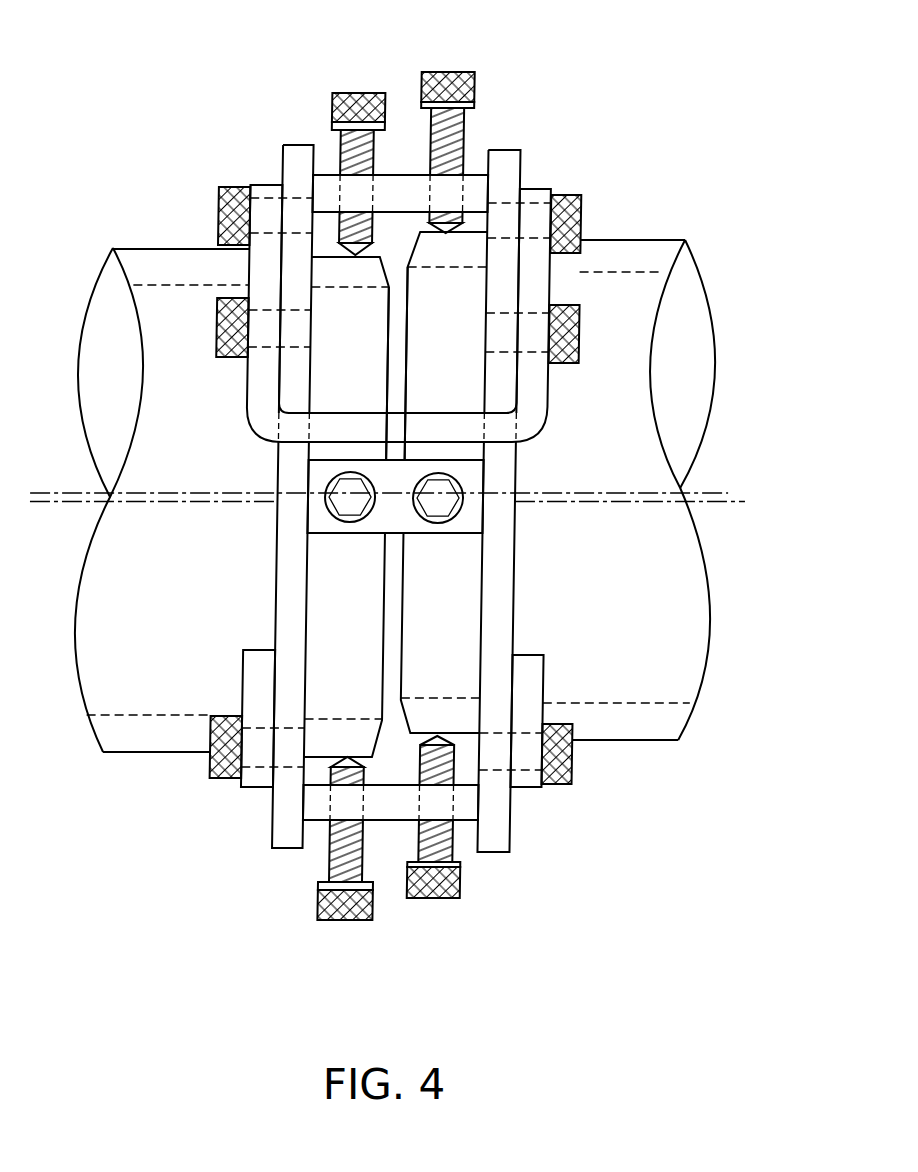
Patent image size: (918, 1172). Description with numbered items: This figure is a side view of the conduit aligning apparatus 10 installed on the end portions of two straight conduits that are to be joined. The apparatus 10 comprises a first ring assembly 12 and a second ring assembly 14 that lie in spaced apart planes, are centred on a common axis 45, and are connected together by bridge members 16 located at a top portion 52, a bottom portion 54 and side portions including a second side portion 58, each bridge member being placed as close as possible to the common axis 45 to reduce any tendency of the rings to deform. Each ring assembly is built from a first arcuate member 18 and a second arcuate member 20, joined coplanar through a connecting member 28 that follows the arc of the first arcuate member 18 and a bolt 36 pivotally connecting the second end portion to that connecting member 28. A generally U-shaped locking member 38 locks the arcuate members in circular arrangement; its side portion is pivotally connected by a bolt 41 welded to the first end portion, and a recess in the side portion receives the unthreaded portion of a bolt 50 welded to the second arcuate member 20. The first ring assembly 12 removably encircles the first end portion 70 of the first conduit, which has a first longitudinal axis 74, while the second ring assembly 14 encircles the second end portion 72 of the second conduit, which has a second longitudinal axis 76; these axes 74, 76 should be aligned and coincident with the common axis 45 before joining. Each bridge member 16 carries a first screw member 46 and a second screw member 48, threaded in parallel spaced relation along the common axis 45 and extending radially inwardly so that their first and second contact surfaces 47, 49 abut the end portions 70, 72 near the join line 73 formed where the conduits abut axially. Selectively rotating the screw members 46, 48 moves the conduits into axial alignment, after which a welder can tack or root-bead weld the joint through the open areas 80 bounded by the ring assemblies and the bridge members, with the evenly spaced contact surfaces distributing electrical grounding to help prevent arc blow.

The apparatus 10 is at (553, 123).
The first ring assembly 12 is at (265, 560).
The second ring assembly 14 is at (528, 563).
The bridge member 16 is at (338, 175).
The first arcuate member 18 is at (305, 158).
The second arcuate member 20 is at (282, 836).
The connecting member 28 is at (245, 665).
The bolt 36 is at (216, 770).
The locking member 38 is at (540, 408).
The bolt 41 is at (213, 208).
The common axis 45 is at (738, 505).
The first screw member 46 is at (372, 93).
The first contact surface 47 is at (358, 256).
The second screw member 48 is at (452, 72).
The second contact surface 49 is at (446, 234).
The bolt 50 is at (213, 327).
The top portion 52 is at (498, 123).
The bottom portion 54 is at (281, 874).
The second side portion 58 is at (530, 518).
The first end portion 70 is at (329, 376).
The second end portion 72 is at (424, 376).
The join line 73 is at (406, 245).
The first longitudinal axis 74 is at (190, 502).
The second longitudinal axis 76 is at (718, 492).
The area 80 is at (407, 642).